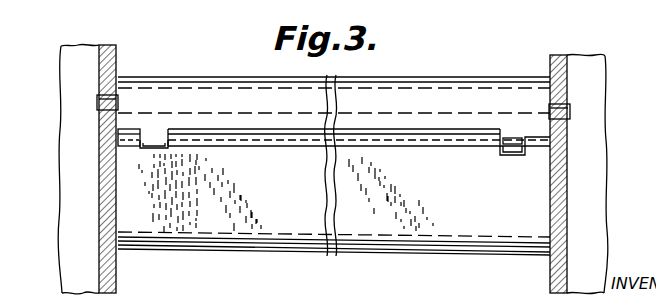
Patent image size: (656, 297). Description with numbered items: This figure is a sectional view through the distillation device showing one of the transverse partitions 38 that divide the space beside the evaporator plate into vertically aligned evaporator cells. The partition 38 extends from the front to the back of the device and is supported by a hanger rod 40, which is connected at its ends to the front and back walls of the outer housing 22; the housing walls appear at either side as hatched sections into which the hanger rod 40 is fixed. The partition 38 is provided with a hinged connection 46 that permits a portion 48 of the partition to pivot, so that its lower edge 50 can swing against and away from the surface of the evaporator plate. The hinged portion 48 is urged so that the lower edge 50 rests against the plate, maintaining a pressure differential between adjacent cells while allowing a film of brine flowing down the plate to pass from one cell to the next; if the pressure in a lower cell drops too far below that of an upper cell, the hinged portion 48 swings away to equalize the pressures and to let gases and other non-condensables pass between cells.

The outer housing 22 is at (116, 53).
The transverse partitions 38 is at (399, 80).
The hanger rods 40 is at (98, 103).
The hinged connection 46 is at (141, 148).
The hinged portion of the partition 48 is at (297, 229).
The lower edge 50 is at (217, 247).